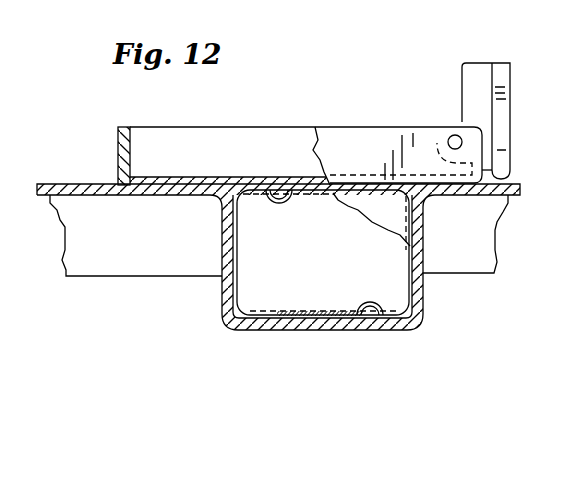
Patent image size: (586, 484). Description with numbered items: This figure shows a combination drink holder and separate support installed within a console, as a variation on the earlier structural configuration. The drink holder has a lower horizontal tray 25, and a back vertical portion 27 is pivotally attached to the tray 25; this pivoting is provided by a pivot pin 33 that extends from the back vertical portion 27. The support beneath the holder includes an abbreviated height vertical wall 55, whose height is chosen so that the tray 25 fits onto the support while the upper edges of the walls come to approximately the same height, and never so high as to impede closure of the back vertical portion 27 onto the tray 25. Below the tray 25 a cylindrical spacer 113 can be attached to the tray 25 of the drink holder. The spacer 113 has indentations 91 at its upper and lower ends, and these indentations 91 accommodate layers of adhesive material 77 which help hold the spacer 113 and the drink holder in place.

The lower horizontal tray 25 is at (203, 177).
The back vertical portion 27 is at (510, 91).
The pivot pin 33 is at (452, 137).
The abbreviated height vertical wall 55 is at (118, 153).
The layer of adhesive material 77 is at (308, 185).
The indentation 91 is at (268, 190).
The cylindrical spacer 113 is at (331, 258).